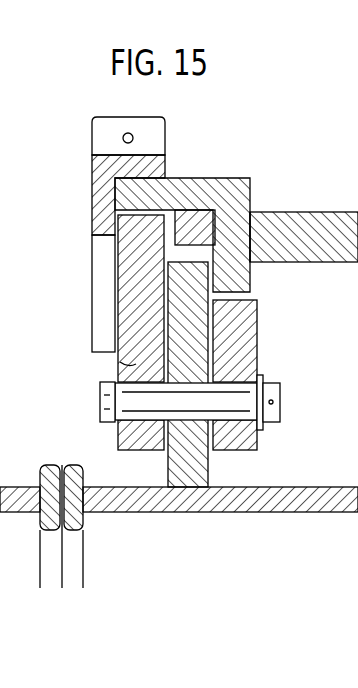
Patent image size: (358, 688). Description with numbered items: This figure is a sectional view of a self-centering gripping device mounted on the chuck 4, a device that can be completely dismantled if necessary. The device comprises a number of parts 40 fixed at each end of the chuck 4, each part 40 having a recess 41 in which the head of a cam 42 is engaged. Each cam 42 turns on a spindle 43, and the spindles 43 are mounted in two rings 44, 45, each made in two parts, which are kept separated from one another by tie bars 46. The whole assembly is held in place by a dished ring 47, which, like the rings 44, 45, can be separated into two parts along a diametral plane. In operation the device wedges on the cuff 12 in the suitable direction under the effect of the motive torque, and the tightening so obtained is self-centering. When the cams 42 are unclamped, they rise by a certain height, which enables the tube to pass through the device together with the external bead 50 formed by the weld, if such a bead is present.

The chuck 4 is at (311, 226).
The cuff 12 is at (233, 508).
The part 40 is at (199, 214).
The recess 41 is at (237, 238).
The cam 42 is at (203, 367).
The spindle 43 is at (104, 405).
The ring 44 is at (245, 315).
The ring 45 is at (126, 268).
The tie bar 46 is at (130, 365).
The dished ring 47 is at (104, 176).
The external bead 50 is at (40, 472).